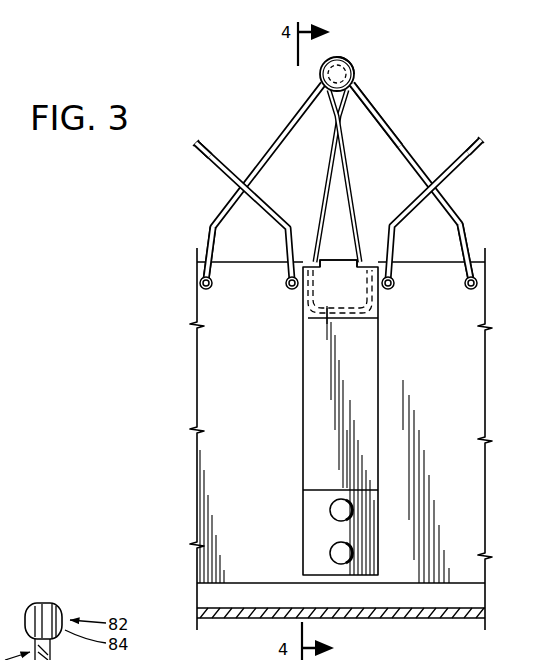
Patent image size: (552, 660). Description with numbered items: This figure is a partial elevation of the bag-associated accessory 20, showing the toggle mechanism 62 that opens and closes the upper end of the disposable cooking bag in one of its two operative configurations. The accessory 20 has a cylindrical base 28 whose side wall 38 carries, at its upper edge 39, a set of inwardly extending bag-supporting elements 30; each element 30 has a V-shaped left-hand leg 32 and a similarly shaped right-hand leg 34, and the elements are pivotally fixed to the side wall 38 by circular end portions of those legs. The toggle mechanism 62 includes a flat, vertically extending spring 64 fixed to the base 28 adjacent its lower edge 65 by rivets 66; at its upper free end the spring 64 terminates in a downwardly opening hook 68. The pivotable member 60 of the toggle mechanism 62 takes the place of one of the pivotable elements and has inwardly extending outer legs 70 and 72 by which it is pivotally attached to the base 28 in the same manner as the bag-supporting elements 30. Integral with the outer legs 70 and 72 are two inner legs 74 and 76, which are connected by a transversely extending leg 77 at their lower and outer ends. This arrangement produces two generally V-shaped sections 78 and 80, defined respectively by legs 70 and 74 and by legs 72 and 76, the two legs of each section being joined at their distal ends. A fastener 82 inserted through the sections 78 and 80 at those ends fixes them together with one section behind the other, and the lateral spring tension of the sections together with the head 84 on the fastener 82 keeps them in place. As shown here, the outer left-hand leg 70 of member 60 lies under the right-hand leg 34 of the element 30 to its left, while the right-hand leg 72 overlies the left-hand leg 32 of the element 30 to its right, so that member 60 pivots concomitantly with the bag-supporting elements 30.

The accessory 20 is at (214, 86).
The cylindrical base 28 is at (196, 352).
The bag-supporting element 30 is at (198, 145).
The left-hand leg 32 is at (457, 167).
The right-hand leg 34 is at (213, 142).
The side wall 38 is at (200, 432).
The upper edge 39 is at (232, 262).
The pivotable member 60 is at (389, 102).
The toggle mechanism 62 is at (375, 72).
The spring 64 is at (302, 409).
The lower edge 65 is at (218, 585).
The rivets 66 is at (330, 553).
The hook 68 is at (340, 258).
The outer left-hand leg 70 is at (269, 150).
The outer right-hand leg 72 is at (398, 124).
The inner leg 74 is at (328, 148).
The inner leg 76 is at (356, 173).
The transversely extending leg 77 is at (346, 320).
The V-shaped section 78 is at (234, 221).
The V-shaped section 80 is at (447, 224).
The fastener 82 is at (346, 56).
The head 84 is at (355, 66).